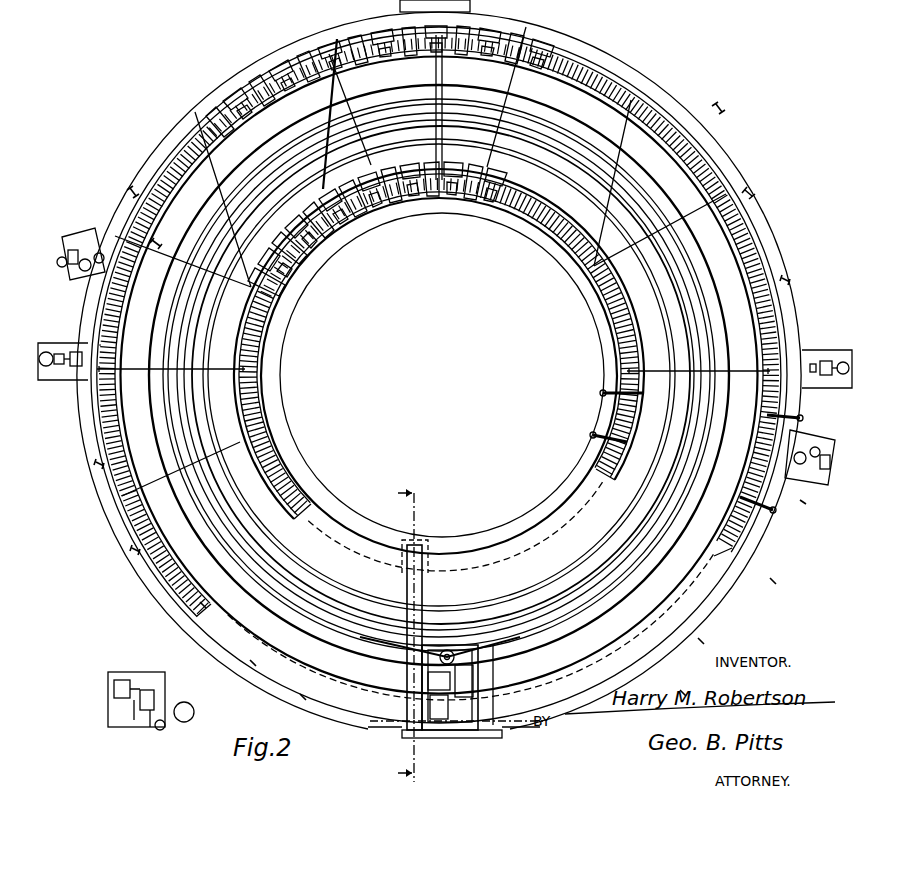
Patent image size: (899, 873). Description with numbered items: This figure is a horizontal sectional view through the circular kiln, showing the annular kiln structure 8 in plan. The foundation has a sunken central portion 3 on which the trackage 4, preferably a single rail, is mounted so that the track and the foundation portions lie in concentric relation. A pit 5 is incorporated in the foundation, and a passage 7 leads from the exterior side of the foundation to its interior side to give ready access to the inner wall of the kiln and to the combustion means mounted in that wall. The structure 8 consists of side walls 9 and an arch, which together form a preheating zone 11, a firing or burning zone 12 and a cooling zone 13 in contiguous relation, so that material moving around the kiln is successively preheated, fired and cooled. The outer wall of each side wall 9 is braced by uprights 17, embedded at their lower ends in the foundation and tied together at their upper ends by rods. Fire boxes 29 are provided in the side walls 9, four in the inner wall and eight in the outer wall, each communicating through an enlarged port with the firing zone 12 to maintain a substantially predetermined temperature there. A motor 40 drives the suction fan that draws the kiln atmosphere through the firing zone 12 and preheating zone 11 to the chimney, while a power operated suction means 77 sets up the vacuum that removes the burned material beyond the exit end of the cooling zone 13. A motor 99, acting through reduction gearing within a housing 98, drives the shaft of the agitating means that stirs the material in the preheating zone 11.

The sunken central portion 3 is at (376, 722).
The trackage 4 is at (612, 612).
The pit 5 is at (487, 725).
The passage 7 is at (424, 558).
The structure 8 is at (458, 222).
The side walls 9 is at (439, 366).
The preheating zone 11 is at (447, 375).
The firing or burning zone 12 is at (433, 261).
The cooling zone 13 is at (439, 375).
The uprights 17 is at (131, 190).
The fire boxes 29 is at (276, 60).
The motor 40 is at (836, 430).
The power operated suction means 77 is at (151, 709).
The housing 98 is at (78, 368).
The motor 99 is at (38, 355).